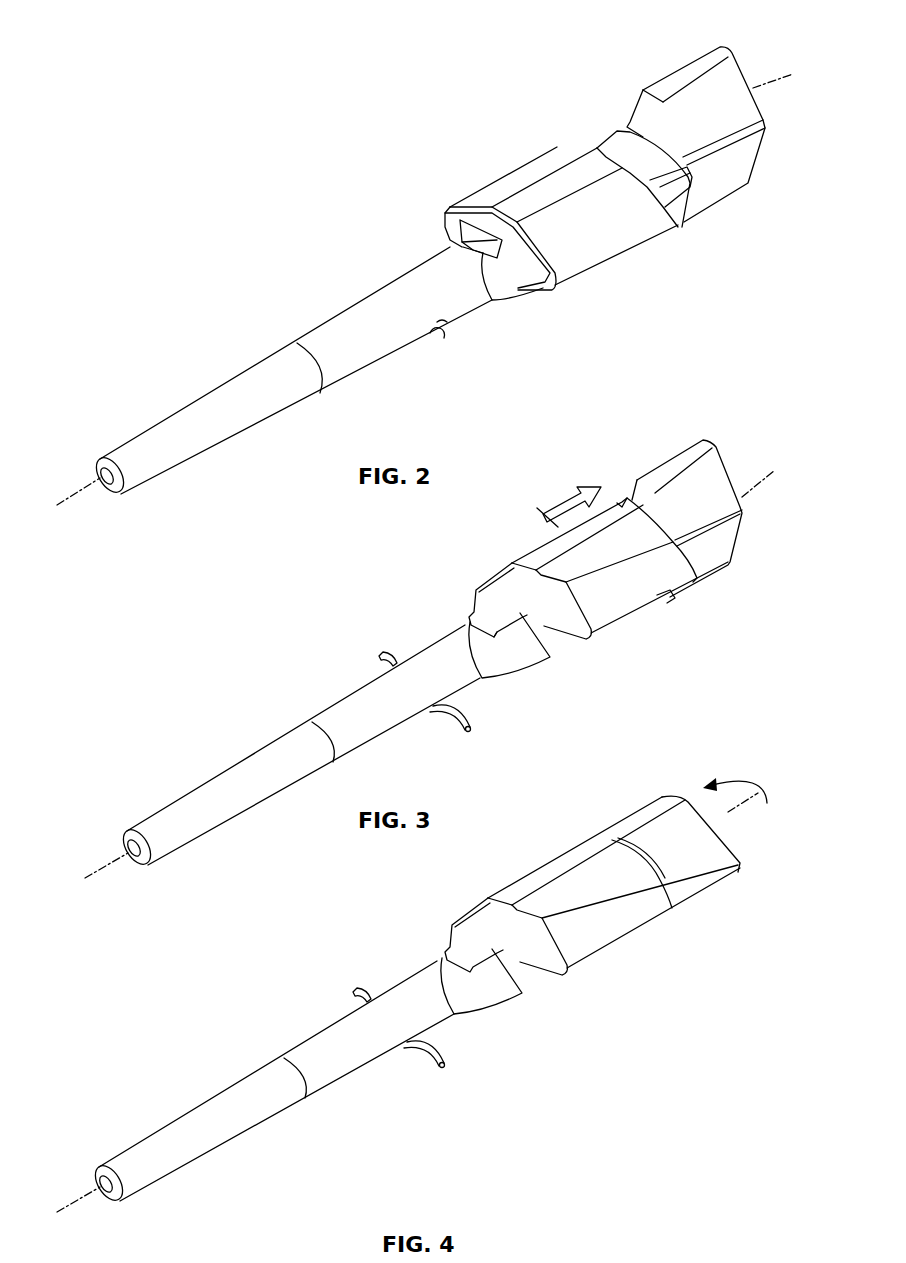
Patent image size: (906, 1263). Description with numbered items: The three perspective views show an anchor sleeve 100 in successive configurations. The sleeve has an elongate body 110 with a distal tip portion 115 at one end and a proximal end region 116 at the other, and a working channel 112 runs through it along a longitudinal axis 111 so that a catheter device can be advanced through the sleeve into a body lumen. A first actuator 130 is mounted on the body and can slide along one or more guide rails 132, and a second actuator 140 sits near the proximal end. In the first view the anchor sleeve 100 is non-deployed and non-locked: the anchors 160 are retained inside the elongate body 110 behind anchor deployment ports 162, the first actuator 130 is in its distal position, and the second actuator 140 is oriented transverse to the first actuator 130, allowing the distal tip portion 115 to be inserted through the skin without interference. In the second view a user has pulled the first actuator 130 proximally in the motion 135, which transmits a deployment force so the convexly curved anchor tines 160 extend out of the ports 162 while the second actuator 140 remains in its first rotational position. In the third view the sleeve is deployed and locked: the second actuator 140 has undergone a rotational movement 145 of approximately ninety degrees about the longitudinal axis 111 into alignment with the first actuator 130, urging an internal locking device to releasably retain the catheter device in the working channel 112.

In FIG. 2, the anchor sleeve 100 is at (245, 234).
In FIG. 3, the anchor sleeve 100 is at (227, 646).
In FIG. 4, the anchor sleeve 100 is at (212, 1010).
In FIG. 2, the elongate body 110 is at (358, 310).
In FIG. 3, the elongate body 110 is at (333, 717).
In FIG. 4, the elongate body 110 is at (308, 1052).
In FIG. 2, the longitudinal axis 111 is at (72, 512).
In FIG. 3, the longitudinal axis 111 is at (97, 880).
In FIG. 4, the longitudinal axis 111 is at (70, 1213).
In FIG. 2, the working channel 112 is at (100, 475).
In FIG. 3, the working channel 112 is at (125, 848).
In FIG. 4, the working channel 112 is at (98, 1183).
In FIG. 2, the distal tip portion 115 is at (154, 425).
In FIG. 3, the distal tip portion 115 is at (166, 805).
In FIG. 4, the distal tip portion 115 is at (141, 1140).
In FIG. 2, the proximal end 116 is at (750, 82).
In FIG. 3, the proximal end 116 is at (733, 467).
In FIG. 4, the proximal end 116 is at (734, 835).
In FIG. 2, the first actuator 130 is at (490, 195).
In FIG. 3, the first actuator 130 is at (550, 548).
In FIG. 4, the first actuator 130 is at (525, 882).
In FIG. 2, the guide rails 132 is at (610, 145).
In FIG. 3, the motion 135 is at (563, 500).
In FIG. 2, the second actuator 140 is at (688, 73).
In FIG. 3, the second actuator 140 is at (675, 462).
In FIG. 4, the second actuator 140 is at (637, 820).
In FIG. 4, the rotational movement 145 is at (732, 778).
In FIG. 2, the anchors 160 is at (430, 336).
In FIG. 3, the anchors 160 is at (380, 655).
In FIG. 4, the anchors 160 is at (354, 990).
In FIG. 2, the anchor deployment ports 162 is at (447, 325).